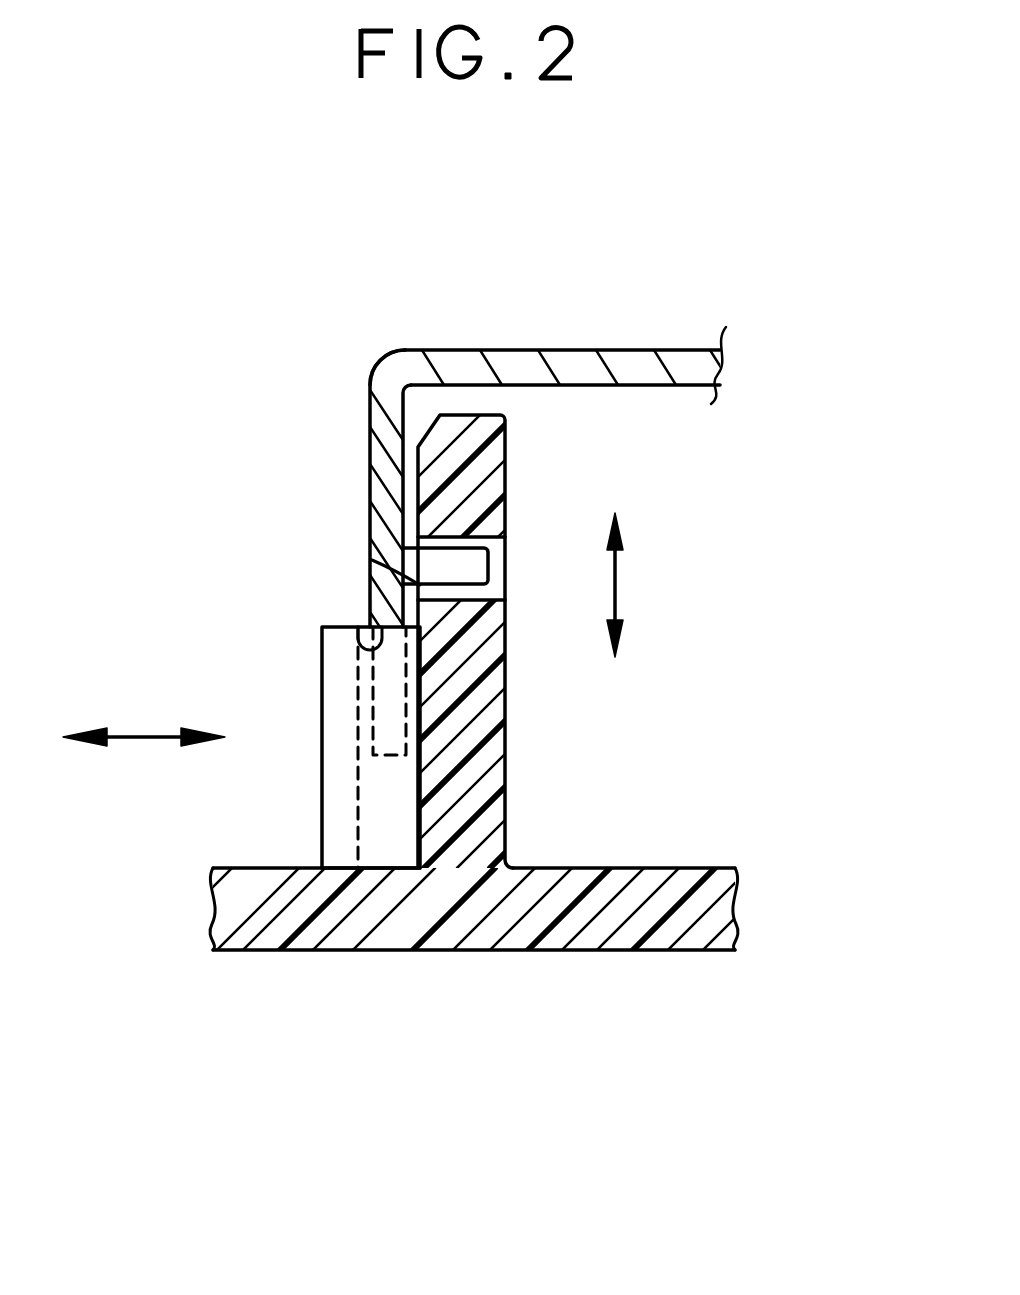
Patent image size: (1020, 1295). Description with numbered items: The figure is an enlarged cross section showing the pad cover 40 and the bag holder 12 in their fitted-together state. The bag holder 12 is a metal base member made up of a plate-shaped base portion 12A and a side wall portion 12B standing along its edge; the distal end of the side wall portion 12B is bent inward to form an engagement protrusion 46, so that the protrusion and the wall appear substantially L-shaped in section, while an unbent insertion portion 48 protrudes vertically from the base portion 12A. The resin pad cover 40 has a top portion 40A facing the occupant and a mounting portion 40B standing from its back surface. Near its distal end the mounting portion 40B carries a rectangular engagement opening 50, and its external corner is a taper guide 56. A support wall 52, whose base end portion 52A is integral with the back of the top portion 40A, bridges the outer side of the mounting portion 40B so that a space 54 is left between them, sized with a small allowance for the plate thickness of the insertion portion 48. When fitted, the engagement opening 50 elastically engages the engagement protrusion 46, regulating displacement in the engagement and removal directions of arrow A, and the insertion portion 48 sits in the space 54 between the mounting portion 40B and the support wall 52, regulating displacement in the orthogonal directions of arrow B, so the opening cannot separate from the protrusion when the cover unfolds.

The bag holder 12 is at (461, 443).
The base portion 12A is at (578, 367).
The side wall portion 12B is at (385, 427).
The pad cover 40 is at (490, 793).
The top portion 40A is at (668, 918).
The mounting portion 40B is at (487, 764).
The engagement protrusion 46 is at (457, 570).
The insertion portion 48 is at (358, 685).
The engagement opening 50 is at (442, 582).
The support wall 52 is at (292, 835).
The base end portion 52A is at (385, 840).
The space 54 is at (375, 625).
The taper guide 56 is at (432, 420).
The arrow A is at (617, 582).
The arrow B is at (167, 735).